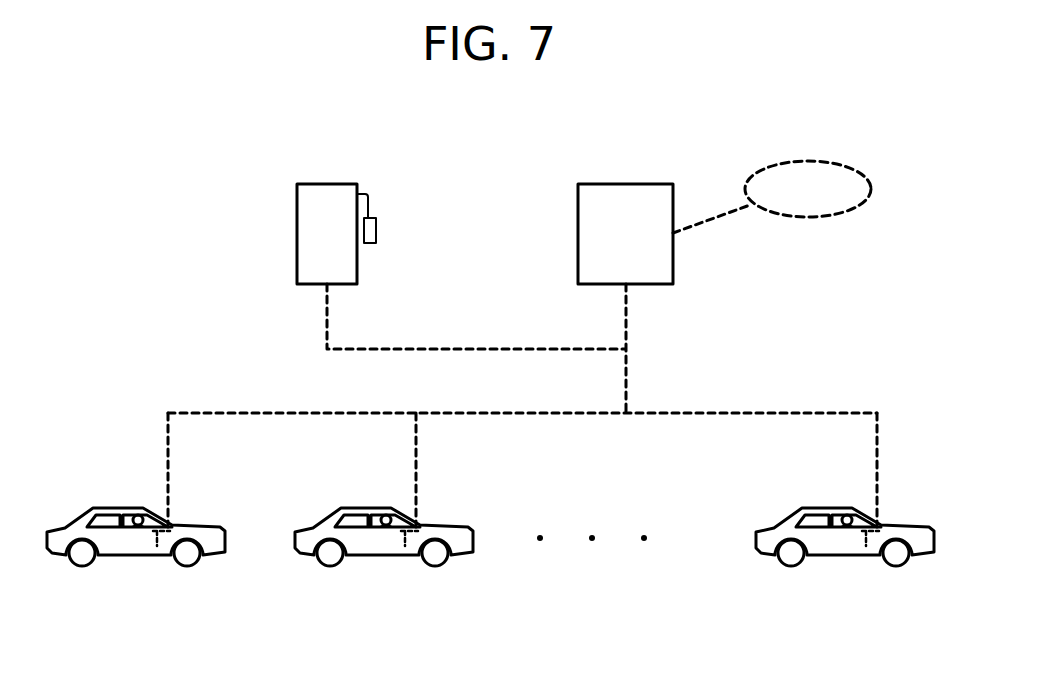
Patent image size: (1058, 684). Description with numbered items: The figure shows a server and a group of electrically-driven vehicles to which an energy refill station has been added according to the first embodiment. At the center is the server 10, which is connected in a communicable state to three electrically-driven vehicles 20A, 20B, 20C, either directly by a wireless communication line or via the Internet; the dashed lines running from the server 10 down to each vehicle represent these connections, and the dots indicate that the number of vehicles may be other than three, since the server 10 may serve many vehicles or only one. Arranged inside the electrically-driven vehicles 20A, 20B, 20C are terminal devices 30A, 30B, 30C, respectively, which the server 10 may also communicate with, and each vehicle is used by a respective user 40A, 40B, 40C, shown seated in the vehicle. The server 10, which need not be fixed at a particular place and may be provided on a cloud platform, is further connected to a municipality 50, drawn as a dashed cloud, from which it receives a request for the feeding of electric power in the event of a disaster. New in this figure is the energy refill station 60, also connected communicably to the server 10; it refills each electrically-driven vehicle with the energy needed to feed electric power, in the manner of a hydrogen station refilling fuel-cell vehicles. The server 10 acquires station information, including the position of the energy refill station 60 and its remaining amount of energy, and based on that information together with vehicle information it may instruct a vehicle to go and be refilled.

The server 10 is at (654, 184).
The electrically-driven vehicle 20A is at (222, 528).
The electrically-driven vehicle 20B is at (470, 528).
The electrically-driven vehicle 20C is at (931, 528).
The terminal device 30A is at (158, 556).
The terminal device 30B is at (406, 556).
The terminal device 30C is at (867, 556).
The user 40A is at (130, 508).
The user 40B is at (378, 508).
The user 40C is at (839, 508).
The municipality 50 is at (871, 184).
The energy refill station 60 is at (322, 183).